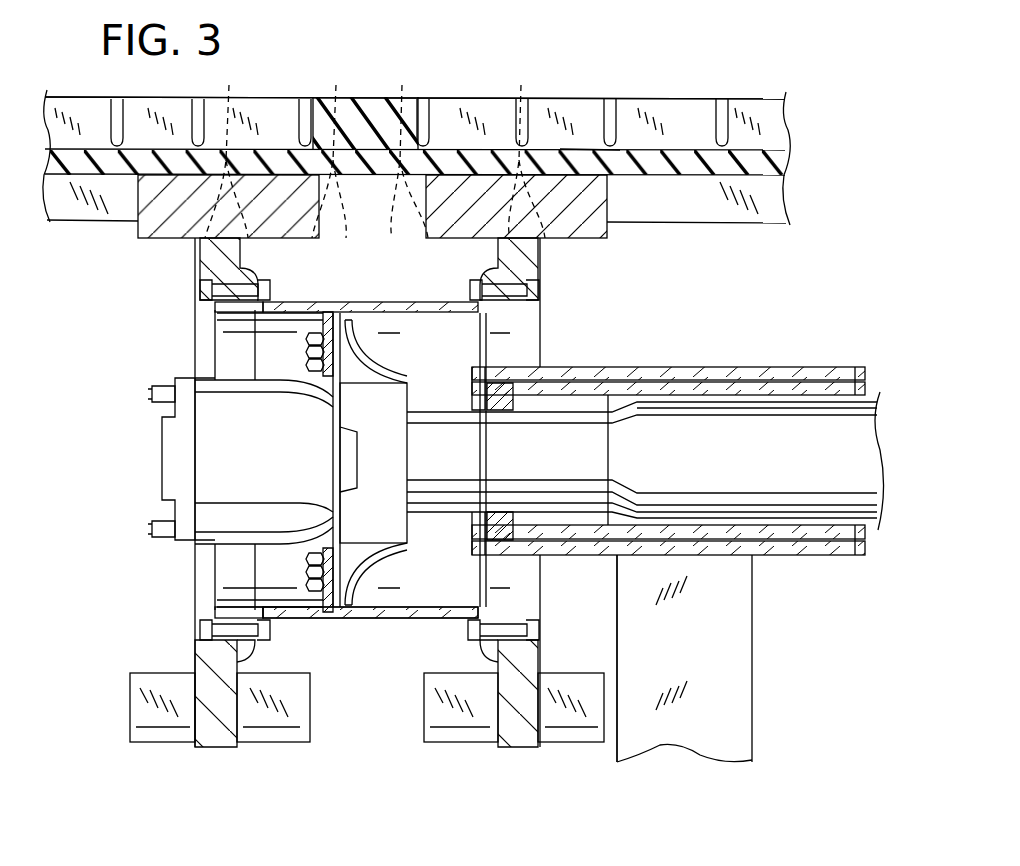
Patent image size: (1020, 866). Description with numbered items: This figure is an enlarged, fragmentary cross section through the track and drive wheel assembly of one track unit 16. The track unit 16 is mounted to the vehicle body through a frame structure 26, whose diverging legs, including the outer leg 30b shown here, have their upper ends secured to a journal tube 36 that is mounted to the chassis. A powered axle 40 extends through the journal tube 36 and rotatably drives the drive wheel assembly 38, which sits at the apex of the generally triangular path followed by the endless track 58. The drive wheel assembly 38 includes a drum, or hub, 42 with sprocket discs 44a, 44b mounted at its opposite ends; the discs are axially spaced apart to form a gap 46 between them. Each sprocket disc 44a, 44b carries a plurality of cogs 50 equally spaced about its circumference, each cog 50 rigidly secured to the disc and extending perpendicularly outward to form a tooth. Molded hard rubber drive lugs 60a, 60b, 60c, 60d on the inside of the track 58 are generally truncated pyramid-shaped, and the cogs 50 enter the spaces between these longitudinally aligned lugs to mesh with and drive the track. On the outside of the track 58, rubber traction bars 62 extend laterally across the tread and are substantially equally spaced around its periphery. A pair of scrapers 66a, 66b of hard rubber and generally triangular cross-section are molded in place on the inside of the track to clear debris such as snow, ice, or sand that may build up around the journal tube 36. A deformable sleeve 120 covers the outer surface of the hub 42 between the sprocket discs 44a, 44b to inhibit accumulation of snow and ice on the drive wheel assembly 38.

The track unit 16 is at (668, 70).
The frame structure 26 is at (808, 735).
The outer leg 30b is at (735, 688).
The journal tube 36 is at (700, 367).
The drive wheel assembly 38 is at (162, 560).
The powered axle 40 is at (770, 430).
The drum 42 is at (232, 350).
The sprocket disc 44a is at (194, 268).
The sprocket disc 44b is at (543, 268).
The gap 46 is at (318, 643).
The cog 50 is at (122, 238).
The endless track 58 is at (790, 126).
The drive lug 60a is at (232, 148).
The drive lug 60b is at (339, 147).
The drive lug 60c is at (407, 148).
The drive lug 60d is at (522, 148).
The traction bar 62 is at (583, 97).
The scraper 66a is at (75, 222).
The scraper 66b is at (770, 225).
The deformable sleeve 120 is at (345, 302).